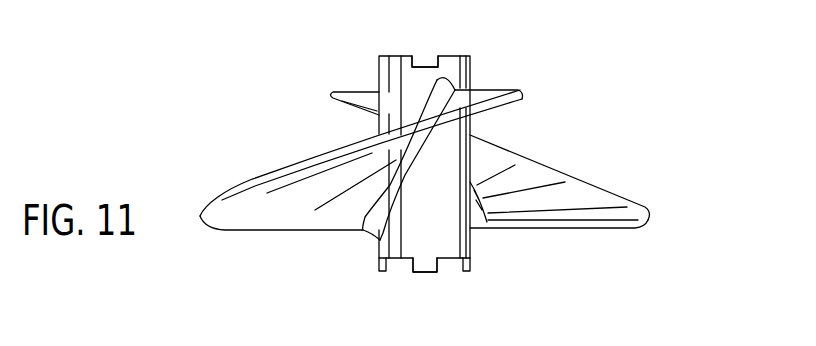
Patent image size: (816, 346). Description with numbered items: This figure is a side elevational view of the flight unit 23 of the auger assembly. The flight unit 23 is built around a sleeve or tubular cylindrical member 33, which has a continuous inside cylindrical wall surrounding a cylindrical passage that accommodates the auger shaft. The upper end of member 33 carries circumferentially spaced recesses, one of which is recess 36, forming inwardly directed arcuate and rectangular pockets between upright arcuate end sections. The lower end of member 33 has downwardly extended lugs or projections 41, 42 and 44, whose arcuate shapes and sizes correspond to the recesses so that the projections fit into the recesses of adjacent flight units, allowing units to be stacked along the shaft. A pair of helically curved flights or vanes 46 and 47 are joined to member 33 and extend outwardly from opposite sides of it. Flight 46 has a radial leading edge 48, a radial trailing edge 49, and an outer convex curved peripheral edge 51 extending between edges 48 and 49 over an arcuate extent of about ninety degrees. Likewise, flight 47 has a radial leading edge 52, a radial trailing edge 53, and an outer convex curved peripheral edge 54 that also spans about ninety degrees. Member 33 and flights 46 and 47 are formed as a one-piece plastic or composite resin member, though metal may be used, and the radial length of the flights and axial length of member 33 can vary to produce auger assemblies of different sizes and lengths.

The flight unit 23 is at (592, 104).
The tubular cylindrical member 33 is at (455, 160).
The recess 36 is at (425, 61).
The projection 41 is at (428, 267).
The projection 42 is at (378, 263).
The projection 44 is at (472, 267).
The flight 46 is at (361, 181).
The flight 47 is at (570, 198).
The radial leading edge 48 is at (270, 233).
The radial trailing edge 49 is at (483, 88).
The outer convex curved peripheral edge 51 is at (222, 193).
The radial leading edge 52 is at (553, 227).
The radial trailing edge 53 is at (348, 90).
The outer convex curved peripheral edge 54 is at (620, 187).